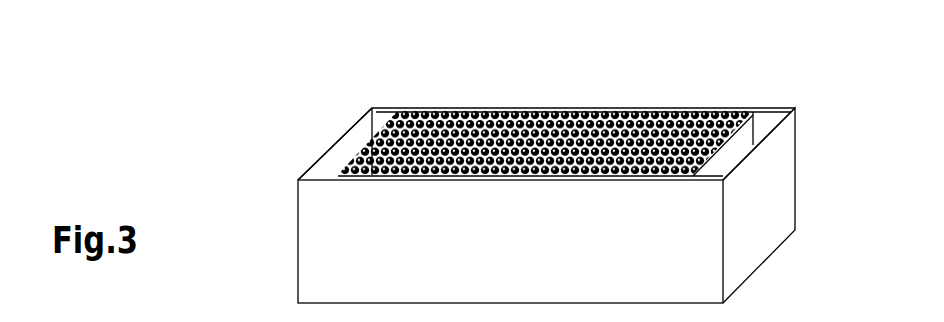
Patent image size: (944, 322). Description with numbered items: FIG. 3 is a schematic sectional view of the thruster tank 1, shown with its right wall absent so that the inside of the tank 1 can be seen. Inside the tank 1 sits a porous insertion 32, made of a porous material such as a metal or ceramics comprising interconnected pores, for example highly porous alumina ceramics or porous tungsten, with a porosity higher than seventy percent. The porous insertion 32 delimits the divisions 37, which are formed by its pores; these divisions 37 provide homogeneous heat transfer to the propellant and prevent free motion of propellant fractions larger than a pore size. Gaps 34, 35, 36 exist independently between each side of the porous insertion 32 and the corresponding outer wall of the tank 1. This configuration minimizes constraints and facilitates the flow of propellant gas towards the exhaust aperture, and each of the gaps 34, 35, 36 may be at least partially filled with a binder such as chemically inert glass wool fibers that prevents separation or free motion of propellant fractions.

The thruster tank 1 is at (332, 97).
The porous insertion 32 is at (718, 110).
The gap 34 is at (735, 152).
The gap 35 is at (495, 103).
The gap 36 is at (334, 155).
The divisions 37 is at (660, 119).